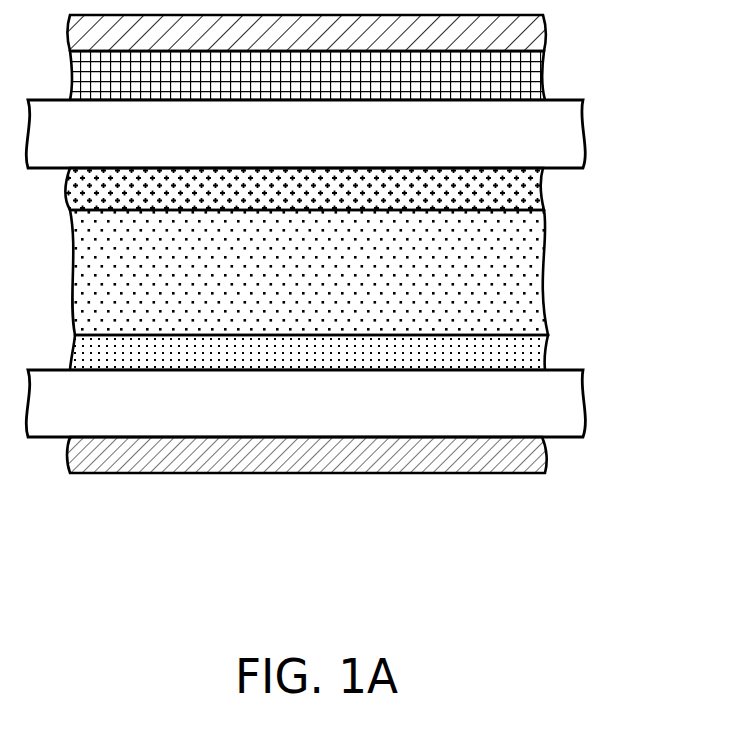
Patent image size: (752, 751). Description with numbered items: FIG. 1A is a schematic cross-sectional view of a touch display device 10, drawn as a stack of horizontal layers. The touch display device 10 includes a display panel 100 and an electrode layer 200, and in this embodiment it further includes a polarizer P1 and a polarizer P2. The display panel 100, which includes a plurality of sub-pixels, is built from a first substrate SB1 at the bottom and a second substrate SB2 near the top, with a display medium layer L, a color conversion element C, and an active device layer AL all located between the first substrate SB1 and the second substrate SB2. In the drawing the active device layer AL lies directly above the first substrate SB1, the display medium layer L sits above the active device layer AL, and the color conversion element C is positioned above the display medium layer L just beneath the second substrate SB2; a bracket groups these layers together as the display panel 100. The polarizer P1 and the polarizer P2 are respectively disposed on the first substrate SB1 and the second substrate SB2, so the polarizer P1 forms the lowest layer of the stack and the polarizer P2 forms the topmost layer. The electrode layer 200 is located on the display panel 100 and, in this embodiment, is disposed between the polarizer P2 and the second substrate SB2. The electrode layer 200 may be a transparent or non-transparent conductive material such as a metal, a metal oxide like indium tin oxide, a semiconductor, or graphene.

The touch display device 10 is at (386, 288).
The display panel 100 is at (386, 268).
The electrode layer 200 is at (527, 79).
The polarizer P1 is at (527, 461).
The polarizer P2 is at (527, 36).
The first substrate SB1 is at (353, 403).
The second substrate SB2 is at (568, 133).
The active device layer AL is at (527, 355).
The display medium layer L is at (522, 272).
The color conversion element C is at (527, 190).